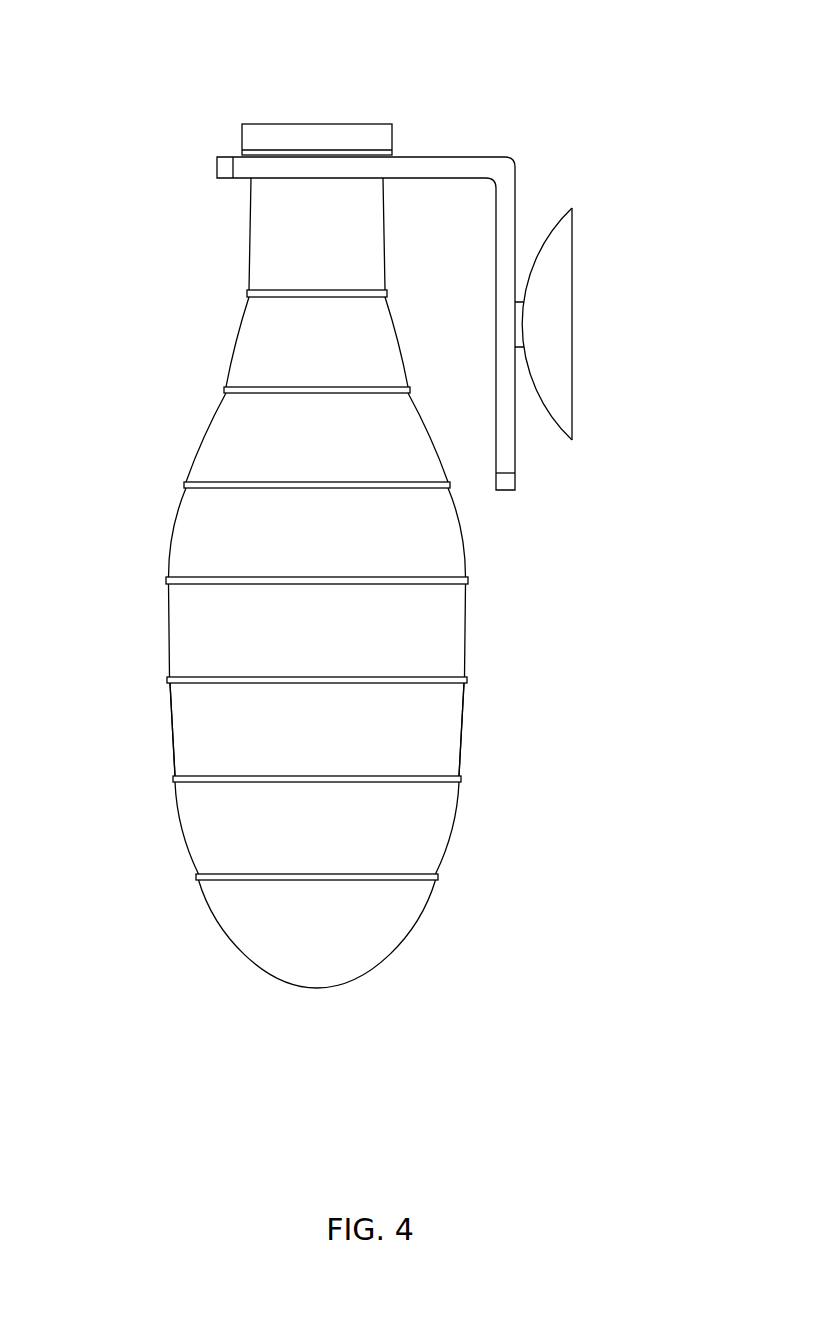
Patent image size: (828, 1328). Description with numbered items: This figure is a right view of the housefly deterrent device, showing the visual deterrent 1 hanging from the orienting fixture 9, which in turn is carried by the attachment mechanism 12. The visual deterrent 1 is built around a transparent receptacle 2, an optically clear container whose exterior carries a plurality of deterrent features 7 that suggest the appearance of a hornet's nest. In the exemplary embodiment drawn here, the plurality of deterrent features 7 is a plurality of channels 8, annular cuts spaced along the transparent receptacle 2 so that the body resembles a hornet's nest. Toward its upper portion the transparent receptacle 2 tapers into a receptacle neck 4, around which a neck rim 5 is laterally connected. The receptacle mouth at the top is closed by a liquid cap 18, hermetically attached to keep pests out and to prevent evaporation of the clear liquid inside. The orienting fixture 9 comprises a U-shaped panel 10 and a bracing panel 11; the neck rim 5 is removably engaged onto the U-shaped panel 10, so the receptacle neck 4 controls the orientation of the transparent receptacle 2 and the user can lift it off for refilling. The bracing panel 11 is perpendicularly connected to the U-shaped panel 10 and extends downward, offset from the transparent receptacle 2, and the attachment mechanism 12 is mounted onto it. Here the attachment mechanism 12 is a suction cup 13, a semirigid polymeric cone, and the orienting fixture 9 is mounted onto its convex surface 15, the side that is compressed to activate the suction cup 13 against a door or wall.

The visual deterrent 1 is at (169, 970).
The transparent receptacle 2 is at (306, 745).
The receptacle neck 4 is at (258, 238).
The neck rim 5 is at (373, 155).
The plurality of deterrent features 7 is at (122, 565).
The plurality of channels 8 is at (218, 478).
The orienting fixture 9 is at (465, 95).
The U-shaped panel 10 is at (420, 170).
The bracing panel 11 is at (508, 450).
The attachment mechanism 12 is at (658, 175).
The suction cup 13 is at (603, 430).
The convex surface 15 is at (552, 242).
The liquid cap 18 is at (268, 137).